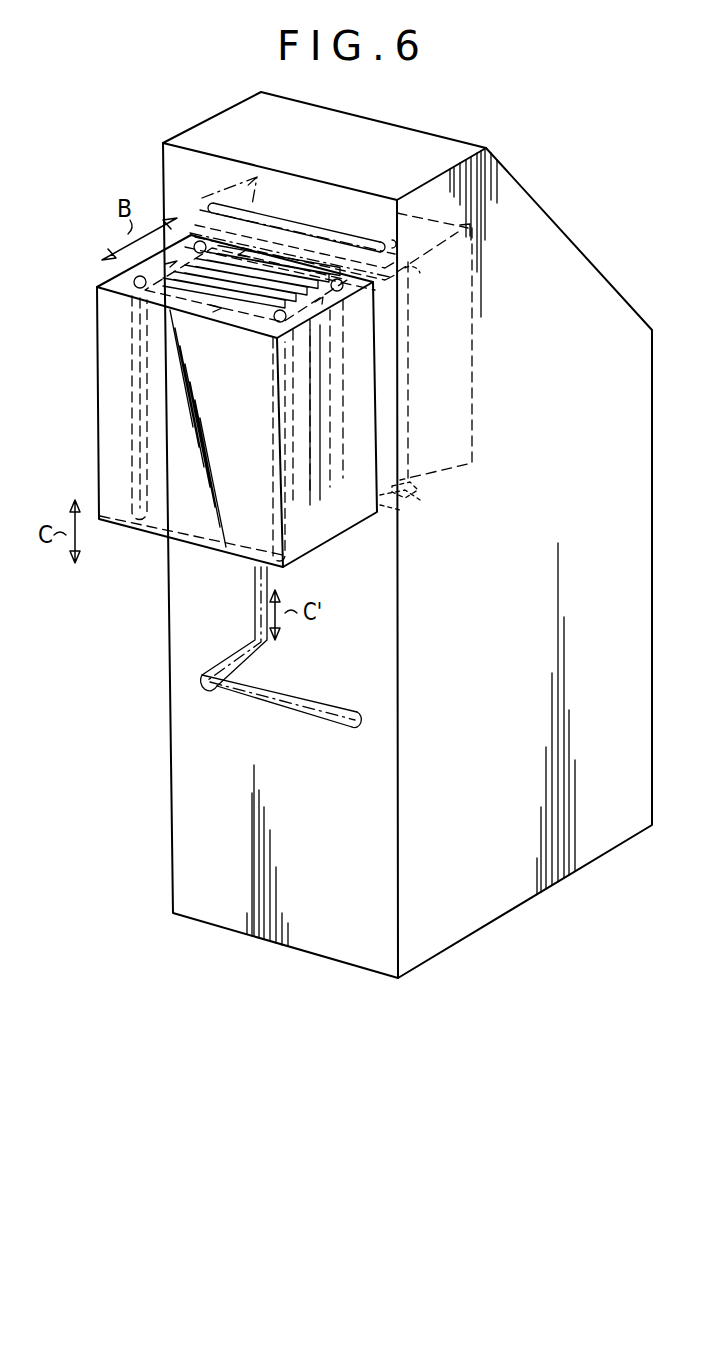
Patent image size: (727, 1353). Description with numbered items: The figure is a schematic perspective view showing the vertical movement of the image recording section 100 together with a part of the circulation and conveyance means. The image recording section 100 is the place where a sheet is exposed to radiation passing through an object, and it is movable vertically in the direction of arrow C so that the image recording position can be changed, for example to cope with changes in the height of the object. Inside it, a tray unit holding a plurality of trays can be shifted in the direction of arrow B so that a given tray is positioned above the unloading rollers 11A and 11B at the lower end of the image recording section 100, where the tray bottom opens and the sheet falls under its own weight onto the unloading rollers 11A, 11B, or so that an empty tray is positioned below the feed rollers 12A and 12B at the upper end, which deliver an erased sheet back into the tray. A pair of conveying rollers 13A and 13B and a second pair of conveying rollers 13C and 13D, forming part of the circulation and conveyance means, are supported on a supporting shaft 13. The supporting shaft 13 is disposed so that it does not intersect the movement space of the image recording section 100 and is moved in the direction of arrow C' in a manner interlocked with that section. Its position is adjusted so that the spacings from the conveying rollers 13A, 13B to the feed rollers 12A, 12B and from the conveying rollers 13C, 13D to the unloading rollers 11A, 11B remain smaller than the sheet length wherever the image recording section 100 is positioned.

The image recording section 100 is at (110, 335).
The conveying roller 13A is at (308, 225).
The conveying roller 13B is at (380, 245).
The feed roller 12A is at (410, 284).
The feed roller 12B is at (420, 254).
The unloading roller 11A is at (410, 510).
The unloading roller 11B is at (420, 500).
The supporting shaft 13 is at (266, 648).
The conveying roller 13C is at (277, 718).
The conveying roller 13D is at (340, 697).